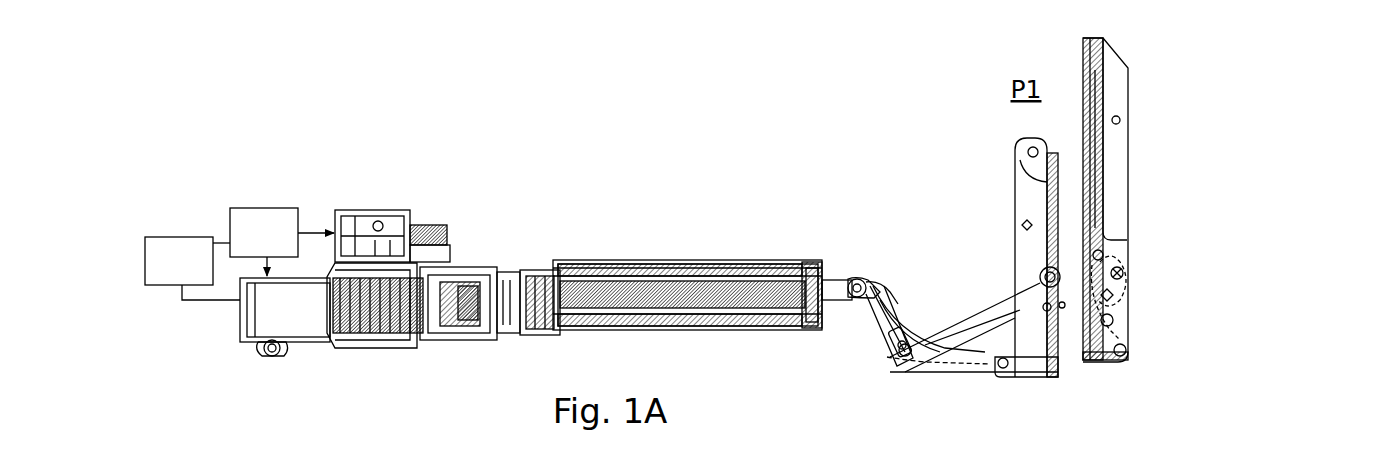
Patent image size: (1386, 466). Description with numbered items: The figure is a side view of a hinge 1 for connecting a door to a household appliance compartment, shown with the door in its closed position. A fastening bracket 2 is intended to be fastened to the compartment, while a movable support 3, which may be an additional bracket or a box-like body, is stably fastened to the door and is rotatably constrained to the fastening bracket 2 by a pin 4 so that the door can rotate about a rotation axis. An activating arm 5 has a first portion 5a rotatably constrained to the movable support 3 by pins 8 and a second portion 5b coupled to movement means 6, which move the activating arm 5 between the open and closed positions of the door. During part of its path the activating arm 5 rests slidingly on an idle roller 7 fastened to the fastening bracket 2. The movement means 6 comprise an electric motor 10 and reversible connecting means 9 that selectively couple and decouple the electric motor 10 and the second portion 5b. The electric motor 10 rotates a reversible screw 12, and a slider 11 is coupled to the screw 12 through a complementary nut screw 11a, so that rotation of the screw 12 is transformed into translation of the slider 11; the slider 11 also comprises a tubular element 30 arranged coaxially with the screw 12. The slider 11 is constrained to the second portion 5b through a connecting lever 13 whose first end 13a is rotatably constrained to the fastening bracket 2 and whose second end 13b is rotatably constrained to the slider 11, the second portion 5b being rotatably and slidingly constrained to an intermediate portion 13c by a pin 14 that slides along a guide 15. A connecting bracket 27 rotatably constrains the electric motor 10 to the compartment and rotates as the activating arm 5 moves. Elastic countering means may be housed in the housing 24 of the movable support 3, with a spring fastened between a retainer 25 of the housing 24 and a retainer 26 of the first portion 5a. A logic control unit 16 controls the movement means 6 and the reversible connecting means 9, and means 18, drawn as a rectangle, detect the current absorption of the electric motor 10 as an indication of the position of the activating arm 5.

The hinge 1 is at (1254, 138).
The fastening bracket 2 is at (1023, 290).
The movable support 3 is at (1081, 52).
The pin 4 is at (1130, 349).
The activating arm 5 is at (998, 341).
The first portion 5a is at (1140, 240).
The second portion 5b is at (923, 360).
The movement means 6 is at (873, 250).
The idle roller 7 is at (1046, 266).
The pins 8 is at (1088, 315).
The reversible connecting means 9 is at (485, 256).
The electric motor 10 is at (376, 358).
The slider 11 is at (710, 260).
The nut screw 11a is at (575, 274).
The screw 12 is at (628, 284).
The connecting lever 13 is at (885, 358).
The first end 13a is at (988, 370).
The second end 13b is at (872, 282).
The intermediate portion 13c is at (905, 320).
The pin 14 is at (906, 350).
The guide 15 is at (888, 318).
The logic control unit 16 is at (258, 208).
The means to detect current absorption 18 is at (163, 237).
The housing 24 is at (1131, 198).
The retainer 25 is at (1121, 120).
The retainer 26 is at (1130, 274).
The connecting bracket 27 is at (252, 346).
The tubular element 30 is at (757, 266).